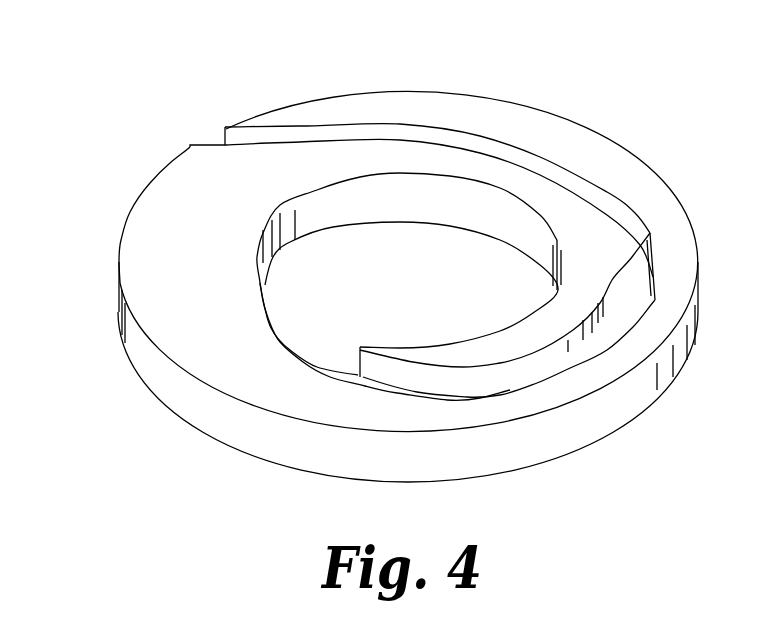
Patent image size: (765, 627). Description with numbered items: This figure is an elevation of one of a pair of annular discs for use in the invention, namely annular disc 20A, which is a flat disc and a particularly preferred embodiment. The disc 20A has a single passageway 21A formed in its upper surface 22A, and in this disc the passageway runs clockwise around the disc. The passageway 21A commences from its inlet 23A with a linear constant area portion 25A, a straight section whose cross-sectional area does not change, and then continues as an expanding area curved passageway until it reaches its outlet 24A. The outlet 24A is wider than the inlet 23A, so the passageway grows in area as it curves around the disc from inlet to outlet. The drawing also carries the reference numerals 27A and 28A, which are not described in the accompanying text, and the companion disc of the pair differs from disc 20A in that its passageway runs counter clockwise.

The annular disc 20A is at (536, 96).
The passageway 21A is at (620, 310).
The upper surface 22A is at (245, 208).
The inlet 23A is at (222, 139).
The outlet 24A is at (340, 367).
The linear constant area portion 25A is at (352, 138).
The lower edge 27A is at (496, 456).
The central opening 28A is at (418, 212).